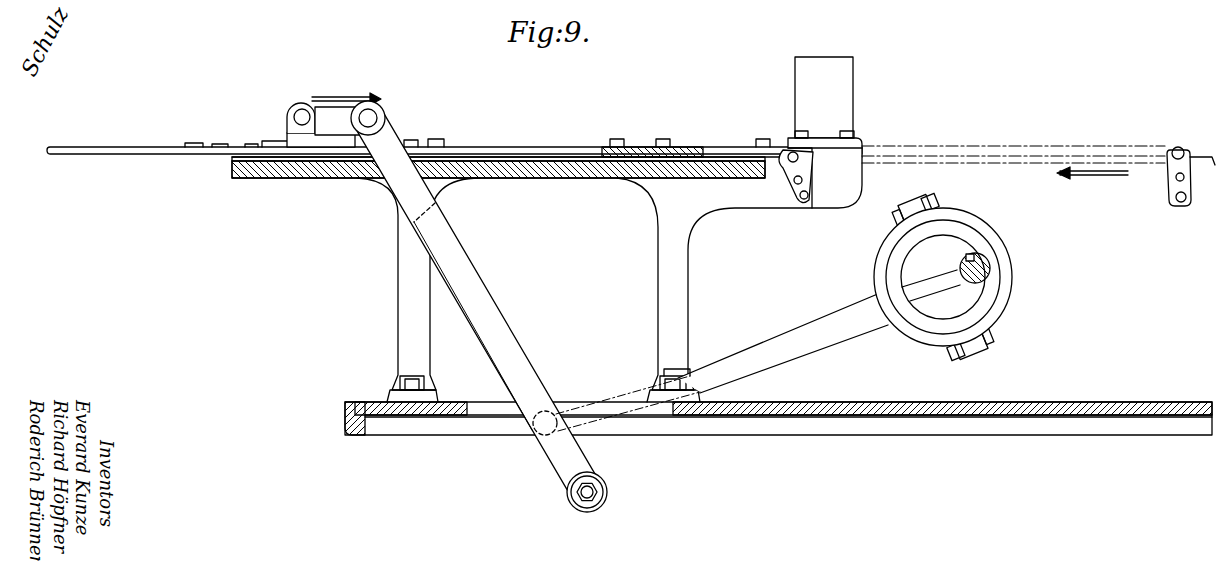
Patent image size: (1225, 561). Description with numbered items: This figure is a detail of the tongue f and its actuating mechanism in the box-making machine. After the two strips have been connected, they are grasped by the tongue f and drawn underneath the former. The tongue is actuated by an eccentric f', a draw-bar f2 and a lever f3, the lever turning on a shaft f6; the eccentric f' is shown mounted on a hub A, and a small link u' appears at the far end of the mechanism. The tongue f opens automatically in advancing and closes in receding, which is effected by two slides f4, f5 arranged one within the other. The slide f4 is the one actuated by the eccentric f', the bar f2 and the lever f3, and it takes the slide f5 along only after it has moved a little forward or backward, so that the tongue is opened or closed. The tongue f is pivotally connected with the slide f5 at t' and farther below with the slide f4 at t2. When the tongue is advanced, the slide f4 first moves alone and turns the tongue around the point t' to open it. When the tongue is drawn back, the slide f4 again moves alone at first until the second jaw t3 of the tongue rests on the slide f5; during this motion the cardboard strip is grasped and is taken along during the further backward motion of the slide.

The tongue f is at (778, 306).
The eccentric f' is at (854, 343).
The draw-bar f2 is at (662, 375).
The lever f3 is at (476, 300).
The slide f4 is at (712, 150).
The slide f5 is at (716, 160).
The shaft f6 is at (585, 512).
The shaft A is at (992, 272).
The pivot point t' is at (818, 176).
The pivot point t2 is at (808, 200).
The second jaw t3 is at (812, 152).
The link u' is at (1191, 176).